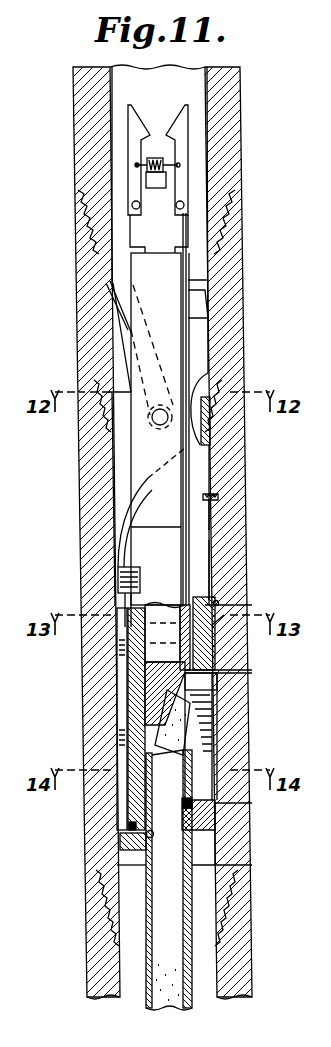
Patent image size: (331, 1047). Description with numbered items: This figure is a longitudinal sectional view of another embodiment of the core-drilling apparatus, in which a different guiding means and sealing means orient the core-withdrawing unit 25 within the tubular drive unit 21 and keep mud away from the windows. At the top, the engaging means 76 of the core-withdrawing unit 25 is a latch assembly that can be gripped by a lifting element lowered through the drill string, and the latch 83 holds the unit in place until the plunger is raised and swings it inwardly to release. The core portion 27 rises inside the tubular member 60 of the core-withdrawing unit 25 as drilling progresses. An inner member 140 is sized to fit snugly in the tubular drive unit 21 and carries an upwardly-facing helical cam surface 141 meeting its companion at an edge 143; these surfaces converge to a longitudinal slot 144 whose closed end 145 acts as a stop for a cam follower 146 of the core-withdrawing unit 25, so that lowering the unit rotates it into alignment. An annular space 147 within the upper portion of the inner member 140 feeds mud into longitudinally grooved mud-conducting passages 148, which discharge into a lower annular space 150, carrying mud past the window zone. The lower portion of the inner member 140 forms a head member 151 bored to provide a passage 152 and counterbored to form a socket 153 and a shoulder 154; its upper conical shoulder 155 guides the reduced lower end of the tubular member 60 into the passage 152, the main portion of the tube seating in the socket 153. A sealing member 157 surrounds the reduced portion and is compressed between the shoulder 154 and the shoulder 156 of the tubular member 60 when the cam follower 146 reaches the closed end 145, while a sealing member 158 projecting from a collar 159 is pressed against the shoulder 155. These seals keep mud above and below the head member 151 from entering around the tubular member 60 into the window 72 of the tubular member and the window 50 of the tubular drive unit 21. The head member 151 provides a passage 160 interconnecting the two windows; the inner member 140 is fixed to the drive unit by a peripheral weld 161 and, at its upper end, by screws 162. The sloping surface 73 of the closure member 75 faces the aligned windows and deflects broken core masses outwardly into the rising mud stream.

The tubular drive unit 21 is at (76, 498).
The core-withdrawing unit 25 is at (128, 447).
The core portion 27 is at (160, 971).
The window 50 is at (230, 672).
The tubular member 60 is at (183, 535).
The window 72 is at (200, 703).
The sloping surface 73 is at (155, 736).
The closure member 75 is at (148, 700).
The engaging means 76 is at (133, 232).
The latch 83 is at (112, 310).
The inner member 140 is at (212, 517).
The helical cam surface 141 is at (200, 388).
The edge 143 is at (205, 400).
The longitudinal slot 144 is at (123, 548).
The closed end 145 is at (122, 583).
The cam follower 146 is at (125, 570).
The annular space 147 is at (200, 557).
The mud-conducting passage 148 is at (130, 648).
The annular space 150 is at (210, 853).
The head member 151 is at (205, 656).
The passage 152 is at (140, 846).
The socket 153 is at (138, 811).
The shoulder 154 is at (140, 826).
The shoulder 155 is at (128, 666).
The shoulder 156 is at (208, 815).
The sealing member 157 is at (205, 835).
The sealing member 158 is at (222, 620).
The collar 159 is at (220, 604).
The passage 160 is at (198, 681).
The peripheral weld 161 is at (215, 743).
The screw 162 is at (222, 494).